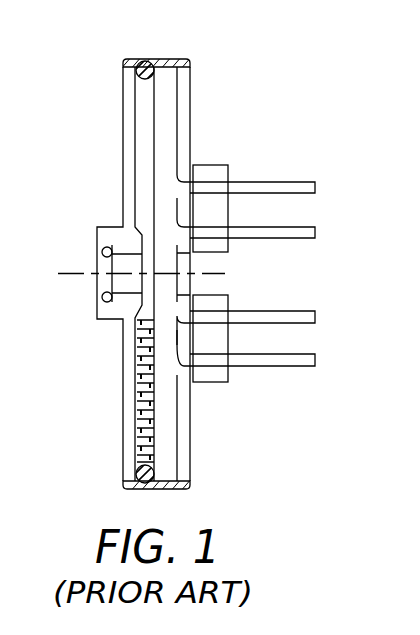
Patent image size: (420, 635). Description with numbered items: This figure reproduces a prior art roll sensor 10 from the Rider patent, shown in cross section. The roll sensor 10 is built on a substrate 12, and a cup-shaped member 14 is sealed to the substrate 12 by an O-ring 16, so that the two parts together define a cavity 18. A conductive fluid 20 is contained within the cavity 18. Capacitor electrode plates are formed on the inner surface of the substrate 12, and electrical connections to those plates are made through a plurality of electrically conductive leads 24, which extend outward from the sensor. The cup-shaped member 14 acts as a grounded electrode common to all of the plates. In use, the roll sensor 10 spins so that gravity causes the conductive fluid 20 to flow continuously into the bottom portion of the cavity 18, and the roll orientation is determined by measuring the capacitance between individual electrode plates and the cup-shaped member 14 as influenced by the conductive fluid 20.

The roll sensor 10 is at (228, 107).
The substrate 12 is at (178, 59).
The cup-shaped member 14 is at (122, 108).
The O-ring 16 is at (134, 70).
The cavity 18 is at (143, 164).
The conductive fluid 20 is at (142, 396).
The electrically conductive leads 24 is at (316, 234).